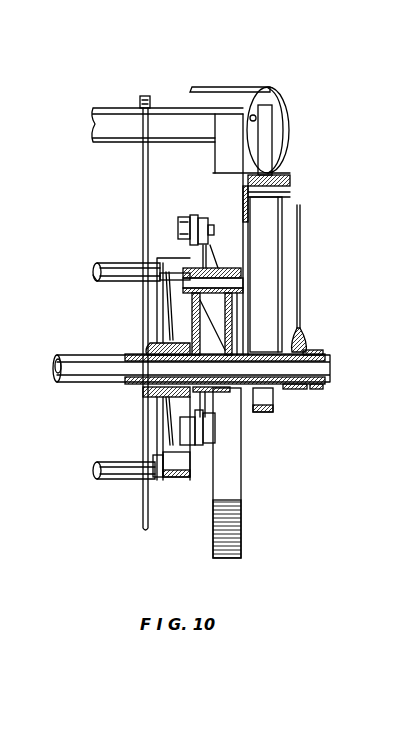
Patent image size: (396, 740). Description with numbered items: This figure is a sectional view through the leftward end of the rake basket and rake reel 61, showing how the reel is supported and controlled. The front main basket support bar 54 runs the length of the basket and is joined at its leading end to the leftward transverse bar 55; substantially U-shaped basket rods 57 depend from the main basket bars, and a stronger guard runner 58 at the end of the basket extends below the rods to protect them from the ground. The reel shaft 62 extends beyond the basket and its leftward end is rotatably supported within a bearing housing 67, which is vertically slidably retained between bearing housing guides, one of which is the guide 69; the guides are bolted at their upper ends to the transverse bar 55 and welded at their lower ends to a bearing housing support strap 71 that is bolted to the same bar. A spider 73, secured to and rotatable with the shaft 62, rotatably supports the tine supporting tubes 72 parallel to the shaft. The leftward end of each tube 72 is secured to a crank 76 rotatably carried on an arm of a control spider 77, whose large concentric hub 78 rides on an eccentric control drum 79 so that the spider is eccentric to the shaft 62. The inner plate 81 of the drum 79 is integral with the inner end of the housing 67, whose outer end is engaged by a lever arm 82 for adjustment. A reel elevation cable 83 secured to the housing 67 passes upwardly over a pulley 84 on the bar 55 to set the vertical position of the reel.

The front main basket support bar 54 is at (117, 127).
The basket rods 57 is at (145, 183).
The reel elevation cable 83 is at (207, 87).
The pulley 84 is at (268, 105).
The leftward transverse bar 55 is at (265, 187).
The bearing housing guide 69 is at (258, 262).
The lever arm 82 is at (300, 290).
The concentric hub 78 is at (225, 272).
The eccentric control drum 79 is at (247, 313).
The crank 76 is at (182, 218).
The control spider 77 is at (194, 220).
The tine supporting tubes 72 is at (102, 268).
The rake reel 61 is at (86, 296).
The inner plate 81 is at (195, 318).
The spider 73 is at (163, 328).
The reel shaft 62 is at (92, 372).
The bearing housing support strap 71 is at (272, 410).
The bearing housing 67 is at (243, 395).
The guard runner 58 is at (235, 525).